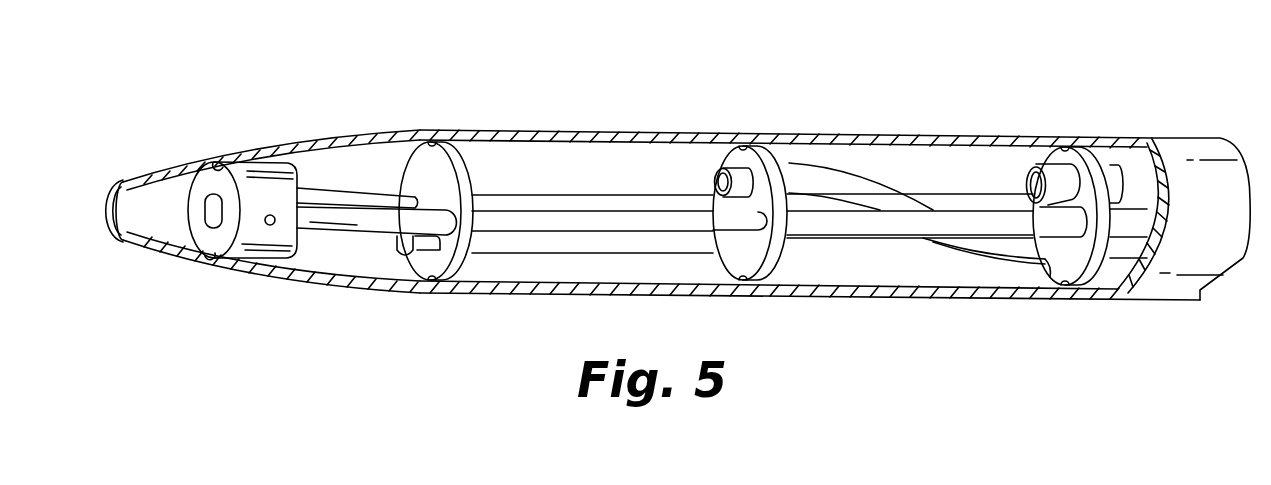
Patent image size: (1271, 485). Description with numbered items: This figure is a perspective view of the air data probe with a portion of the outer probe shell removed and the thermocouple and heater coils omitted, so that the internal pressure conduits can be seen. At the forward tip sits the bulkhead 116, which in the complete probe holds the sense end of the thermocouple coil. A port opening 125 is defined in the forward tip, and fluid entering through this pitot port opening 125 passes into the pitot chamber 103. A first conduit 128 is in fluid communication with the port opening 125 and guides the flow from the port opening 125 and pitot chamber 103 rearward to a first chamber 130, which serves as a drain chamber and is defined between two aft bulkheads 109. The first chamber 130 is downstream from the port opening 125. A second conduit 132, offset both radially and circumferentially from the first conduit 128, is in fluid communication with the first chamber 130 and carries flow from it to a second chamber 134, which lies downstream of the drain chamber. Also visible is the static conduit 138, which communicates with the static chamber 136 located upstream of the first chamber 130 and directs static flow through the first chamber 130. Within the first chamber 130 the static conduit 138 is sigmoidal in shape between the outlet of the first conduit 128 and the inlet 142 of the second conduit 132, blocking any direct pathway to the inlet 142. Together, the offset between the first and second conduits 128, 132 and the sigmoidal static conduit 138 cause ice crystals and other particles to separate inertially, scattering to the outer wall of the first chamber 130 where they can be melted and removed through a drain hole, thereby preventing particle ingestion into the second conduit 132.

The pitot chamber 103 is at (163, 205).
The port opening 125 is at (108, 197).
The bulkhead 116 is at (248, 177).
The first conduit 128 is at (402, 260).
The aft bulkheads 109 is at (463, 145).
The static chamber 136 is at (552, 178).
The static conduit 138 is at (820, 177).
The first chamber 130 is at (920, 182).
The inlet 142 is at (1027, 167).
The second conduit 132 is at (1053, 172).
The second chamber 134 is at (1140, 173).